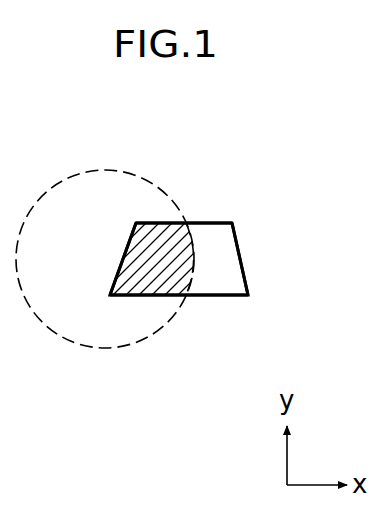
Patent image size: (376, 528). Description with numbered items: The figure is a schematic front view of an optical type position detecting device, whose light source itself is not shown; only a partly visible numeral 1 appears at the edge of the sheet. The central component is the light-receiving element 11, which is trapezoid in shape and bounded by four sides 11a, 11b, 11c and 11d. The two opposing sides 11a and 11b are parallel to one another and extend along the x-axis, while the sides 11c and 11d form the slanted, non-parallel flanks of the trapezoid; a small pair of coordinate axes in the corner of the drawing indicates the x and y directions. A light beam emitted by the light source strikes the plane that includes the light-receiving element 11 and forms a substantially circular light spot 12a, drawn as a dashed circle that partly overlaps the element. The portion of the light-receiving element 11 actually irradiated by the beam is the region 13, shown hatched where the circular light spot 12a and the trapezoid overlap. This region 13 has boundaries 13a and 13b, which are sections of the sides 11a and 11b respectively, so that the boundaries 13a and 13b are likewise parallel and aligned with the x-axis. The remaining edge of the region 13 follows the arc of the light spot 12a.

The element (clipped at sheet edge) 1 is at (371, 347).
The light-receiving element 11 is at (246, 281).
The side 11a is at (210, 223).
The side 11b is at (223, 295).
The side 11c is at (117, 274).
The side 11d is at (240, 251).
The light spot 12a is at (98, 166).
The region 13 is at (128, 253).
The boundary 13a is at (150, 223).
The boundary 13b is at (143, 295).